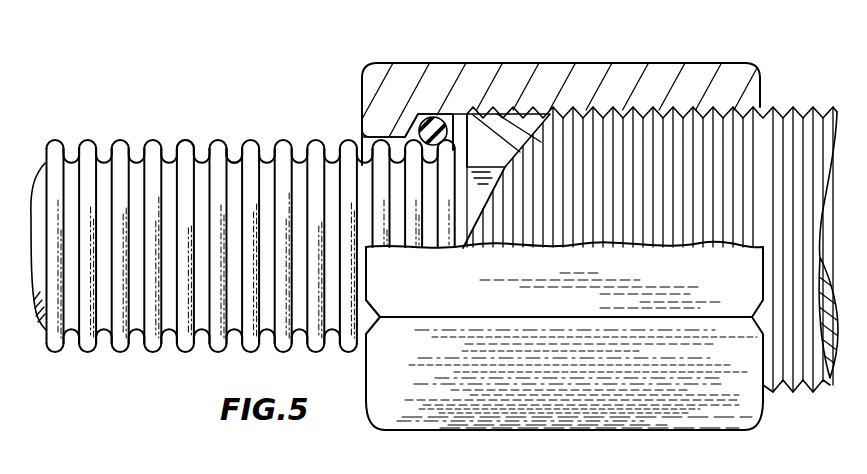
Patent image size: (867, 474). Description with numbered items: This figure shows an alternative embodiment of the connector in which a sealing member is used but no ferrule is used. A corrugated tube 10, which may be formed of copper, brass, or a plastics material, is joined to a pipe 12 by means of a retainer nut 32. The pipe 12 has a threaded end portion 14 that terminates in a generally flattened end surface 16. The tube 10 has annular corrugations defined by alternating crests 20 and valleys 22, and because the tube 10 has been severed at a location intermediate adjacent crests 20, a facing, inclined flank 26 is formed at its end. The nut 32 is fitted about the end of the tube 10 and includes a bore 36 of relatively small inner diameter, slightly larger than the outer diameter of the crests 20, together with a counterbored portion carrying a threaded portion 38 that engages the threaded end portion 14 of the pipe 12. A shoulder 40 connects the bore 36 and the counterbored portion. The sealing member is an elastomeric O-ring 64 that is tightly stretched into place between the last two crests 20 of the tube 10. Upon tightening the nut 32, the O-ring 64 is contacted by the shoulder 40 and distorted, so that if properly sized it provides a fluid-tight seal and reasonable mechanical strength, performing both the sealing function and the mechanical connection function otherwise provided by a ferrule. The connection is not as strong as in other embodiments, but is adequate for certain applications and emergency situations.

The tube 10 is at (216, 108).
The pipe 12 is at (820, 127).
The threaded end portion 14 is at (658, 127).
The flattened end surface 16 is at (467, 140).
The crests 20 is at (190, 150).
The valleys 22 is at (238, 152).
The inclined flank 26 is at (462, 223).
The retainer nut 32 is at (558, 72).
The bore 36 is at (402, 137).
The threaded portion 38 is at (565, 107).
The shoulder 40 is at (413, 117).
The O-ring 64 is at (447, 117).